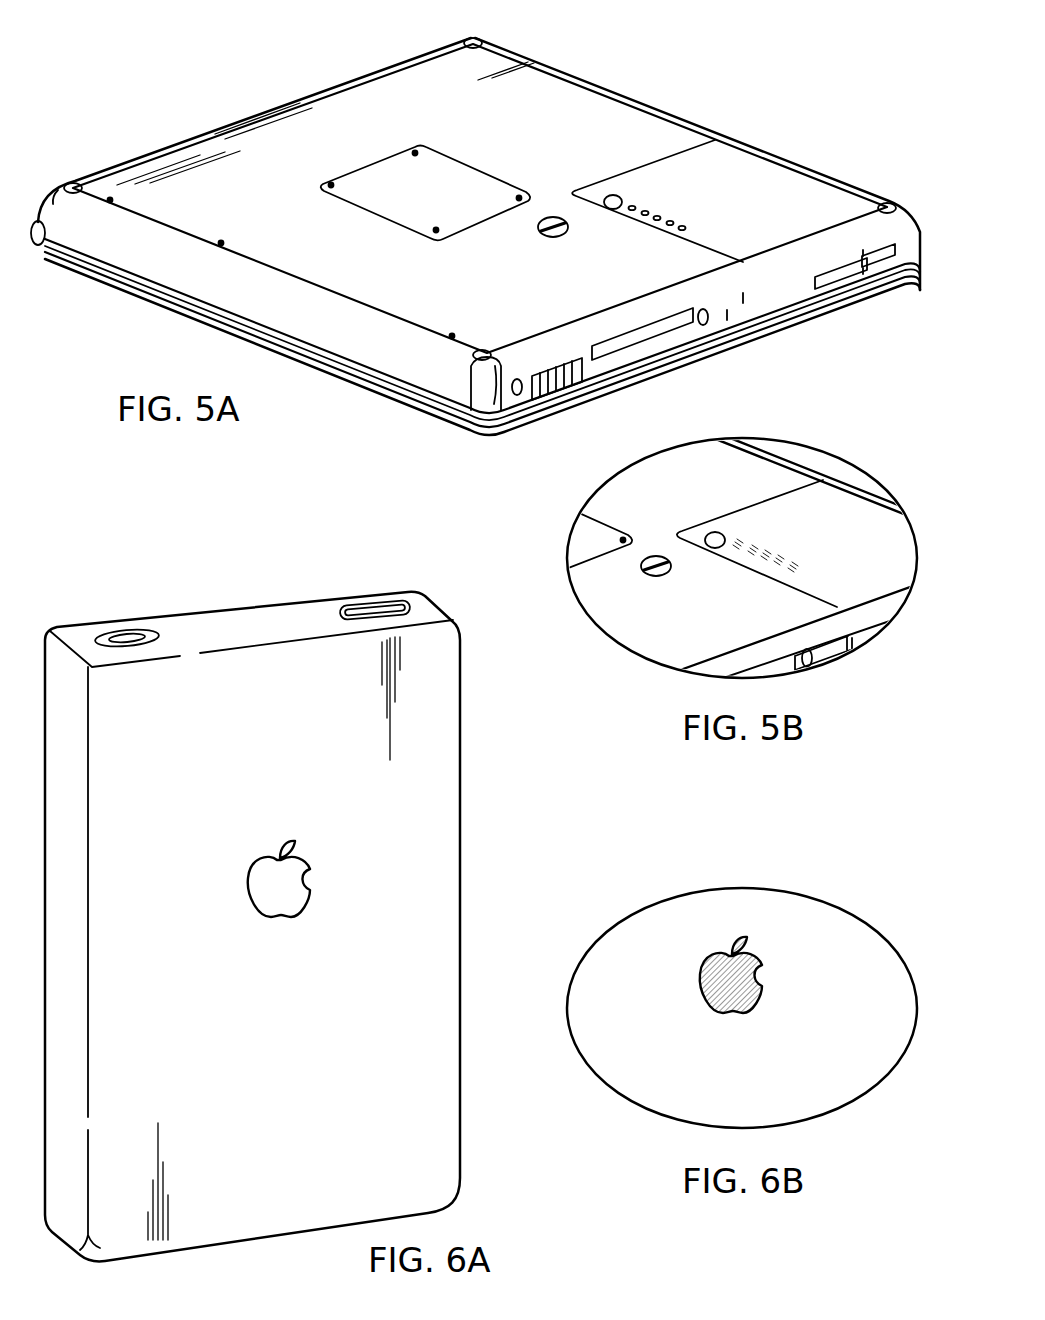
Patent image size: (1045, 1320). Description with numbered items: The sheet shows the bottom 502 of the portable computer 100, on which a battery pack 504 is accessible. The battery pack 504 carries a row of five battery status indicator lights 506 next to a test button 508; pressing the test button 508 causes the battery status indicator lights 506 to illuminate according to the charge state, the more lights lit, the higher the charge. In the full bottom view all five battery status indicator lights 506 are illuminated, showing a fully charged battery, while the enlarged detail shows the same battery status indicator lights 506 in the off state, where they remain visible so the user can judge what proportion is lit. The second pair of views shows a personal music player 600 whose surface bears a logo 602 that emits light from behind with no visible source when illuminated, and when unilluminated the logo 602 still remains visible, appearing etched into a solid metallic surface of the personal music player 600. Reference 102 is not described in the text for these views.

In FIG. 5A, the portable computer 100 is at (200, 55).
In FIG. 5A, the housing 102 is at (143, 152).
In FIG. 5A, the bottom 502 is at (315, 120).
In FIG. 5A, the battery pack 504 is at (753, 213).
In FIG. 5B, the battery pack 504 is at (855, 553).
In FIG. 5A, the battery status indicator lights 506 is at (637, 200).
In FIG. 5B, the battery status indicator lights 506 is at (737, 537).
In FIG. 5A, the test button 508 is at (612, 194).
In FIG. 5B, the test button 508 is at (715, 531).
In FIG. 6A, the personal music player 600 is at (165, 585).
In FIG. 6A, the logo 602 is at (315, 874).
In FIG. 6B, the logo 602 is at (773, 970).